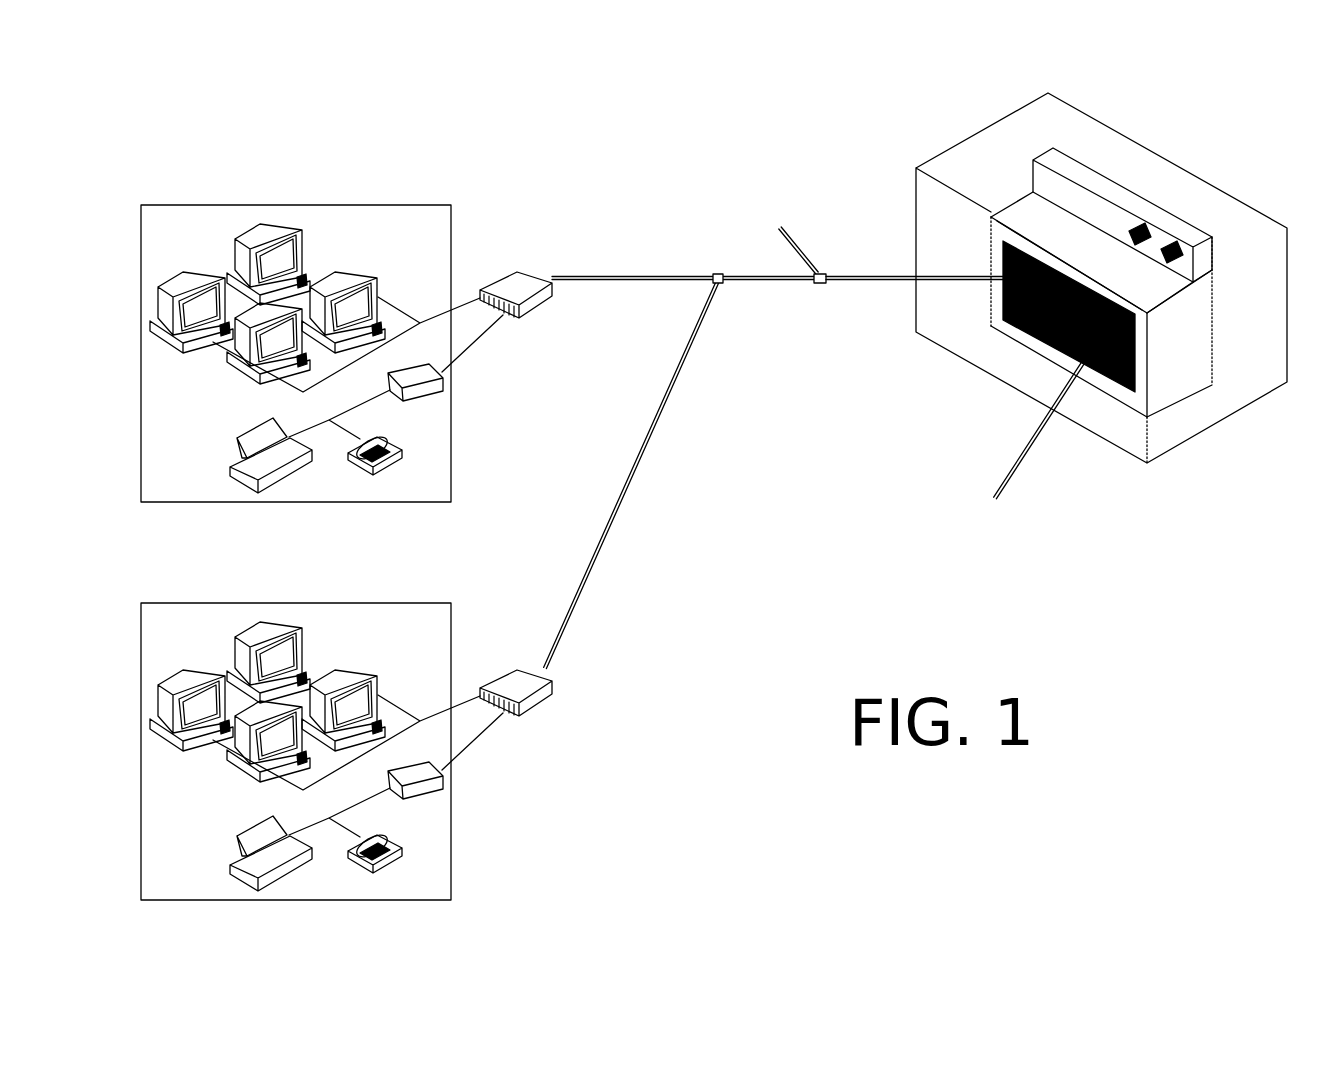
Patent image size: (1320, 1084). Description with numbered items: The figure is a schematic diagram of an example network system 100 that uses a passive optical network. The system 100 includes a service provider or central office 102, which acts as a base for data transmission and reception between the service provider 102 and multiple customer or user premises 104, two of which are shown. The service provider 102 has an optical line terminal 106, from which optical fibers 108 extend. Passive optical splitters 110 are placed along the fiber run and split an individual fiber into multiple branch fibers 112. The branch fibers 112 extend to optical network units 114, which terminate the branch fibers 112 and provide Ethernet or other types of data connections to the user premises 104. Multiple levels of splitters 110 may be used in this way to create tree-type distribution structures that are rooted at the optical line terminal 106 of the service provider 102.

The network system 100 is at (426, 138).
The service provider or central office 102 is at (956, 156).
The user premises 104 is at (243, 212).
The optical line terminal 106 is at (1178, 380).
The optical fibers 108 is at (865, 275).
The passive optical splitters 110 is at (716, 274).
The branch fibers 112 is at (780, 228).
The optical network units 114 is at (523, 272).